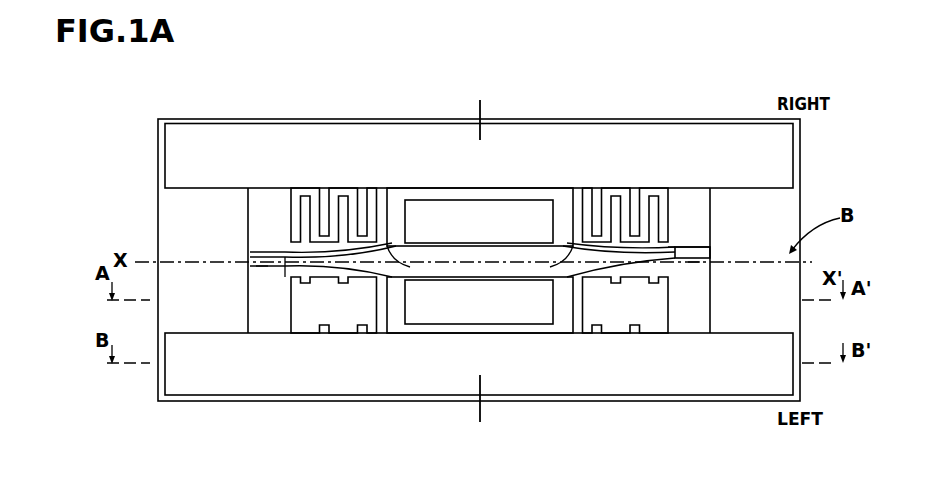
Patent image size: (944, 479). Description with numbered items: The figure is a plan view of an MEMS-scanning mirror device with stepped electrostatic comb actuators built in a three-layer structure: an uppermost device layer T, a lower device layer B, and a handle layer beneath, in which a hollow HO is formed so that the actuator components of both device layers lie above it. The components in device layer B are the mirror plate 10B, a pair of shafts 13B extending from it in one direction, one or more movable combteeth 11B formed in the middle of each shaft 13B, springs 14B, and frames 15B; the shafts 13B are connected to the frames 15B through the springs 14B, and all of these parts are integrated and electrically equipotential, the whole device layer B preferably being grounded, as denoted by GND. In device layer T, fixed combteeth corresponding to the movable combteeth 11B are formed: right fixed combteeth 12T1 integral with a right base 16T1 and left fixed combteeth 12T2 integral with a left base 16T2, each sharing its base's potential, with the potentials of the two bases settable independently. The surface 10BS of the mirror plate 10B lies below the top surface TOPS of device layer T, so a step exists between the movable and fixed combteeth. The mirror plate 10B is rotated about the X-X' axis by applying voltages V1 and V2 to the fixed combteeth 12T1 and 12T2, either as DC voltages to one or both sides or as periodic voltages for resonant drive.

The device layer T is at (660, 132).
The right base 16T1 is at (782, 171).
The left base 16T2 is at (782, 388).
The frame 15B is at (213, 225).
The hollow HO is at (707, 225).
The mirror plate 10B is at (477, 257).
The surface of the mirror plate 10BS is at (510, 213).
The top surface TOPS is at (505, 138).
The movable combteeth 11B is at (343, 188).
The left fixed combteeth 12T2 is at (250, 256).
The right fixed combteeth 12T1 is at (410, 267).
The shaft 13B is at (393, 243).
The spring 14B is at (262, 267).
The ground GND is at (180, 277).
The voltage V1 is at (473, 110).
The voltage V2 is at (475, 413).